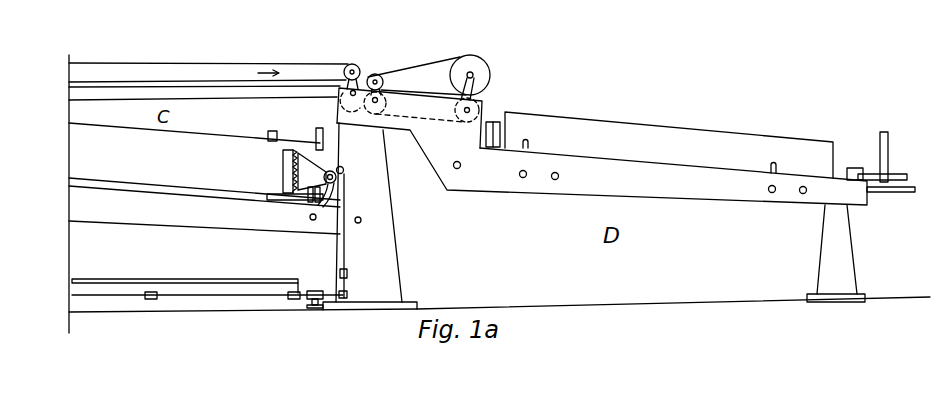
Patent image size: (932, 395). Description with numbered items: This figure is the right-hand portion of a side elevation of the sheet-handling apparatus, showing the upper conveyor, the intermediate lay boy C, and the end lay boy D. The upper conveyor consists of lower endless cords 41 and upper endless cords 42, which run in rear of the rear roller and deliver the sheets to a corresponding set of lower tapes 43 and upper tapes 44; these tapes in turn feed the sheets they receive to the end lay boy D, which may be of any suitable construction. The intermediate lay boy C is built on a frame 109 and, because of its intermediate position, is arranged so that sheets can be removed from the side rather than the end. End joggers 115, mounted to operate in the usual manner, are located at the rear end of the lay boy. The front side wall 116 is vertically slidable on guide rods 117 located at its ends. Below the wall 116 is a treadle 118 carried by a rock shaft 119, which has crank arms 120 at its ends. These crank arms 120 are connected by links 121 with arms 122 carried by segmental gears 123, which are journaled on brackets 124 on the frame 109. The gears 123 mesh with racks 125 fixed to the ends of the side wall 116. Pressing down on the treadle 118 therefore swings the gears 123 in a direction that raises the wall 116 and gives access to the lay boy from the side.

The lower endless cords 41 is at (187, 87).
The upper endless cords 42 is at (253, 63).
The lower tapes 43 is at (437, 122).
The upper tapes 44 is at (417, 63).
The frame 109 is at (124, 222).
The end joggers 115 is at (272, 131).
The front side wall 116 is at (204, 165).
The guide rods 117 is at (332, 138).
The treadle 118 is at (218, 279).
The rock shaft 119 is at (302, 291).
The crank arms 120 is at (348, 294).
The links 121 is at (346, 243).
The arms 122 is at (343, 173).
The segmental gears 123 is at (303, 173).
The brackets 124 is at (330, 198).
The racks 125 is at (288, 155).